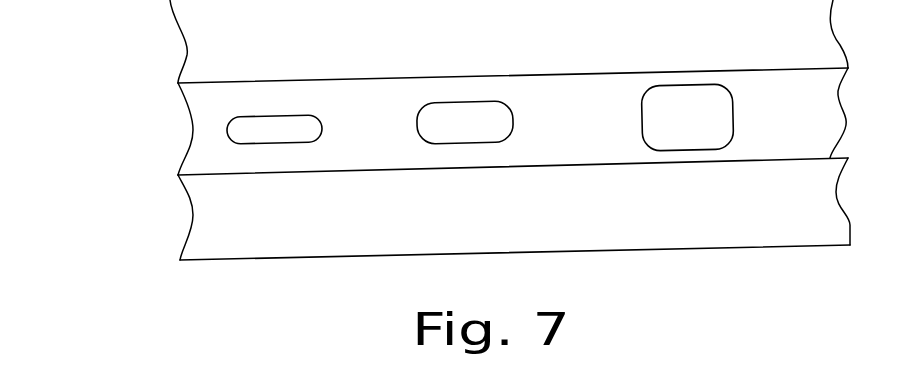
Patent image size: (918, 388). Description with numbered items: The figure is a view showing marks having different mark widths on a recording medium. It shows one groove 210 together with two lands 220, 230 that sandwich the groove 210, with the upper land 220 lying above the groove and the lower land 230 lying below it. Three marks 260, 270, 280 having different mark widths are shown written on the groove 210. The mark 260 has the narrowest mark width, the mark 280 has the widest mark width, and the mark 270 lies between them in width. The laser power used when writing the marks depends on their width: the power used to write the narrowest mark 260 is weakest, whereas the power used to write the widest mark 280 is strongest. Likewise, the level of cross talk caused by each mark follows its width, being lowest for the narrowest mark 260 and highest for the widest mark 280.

The land 220 is at (173, 72).
The groove 210 is at (173, 158).
The land 230 is at (183, 232).
The mark 260 is at (285, 143).
The mark 270 is at (472, 146).
The mark 280 is at (687, 150).